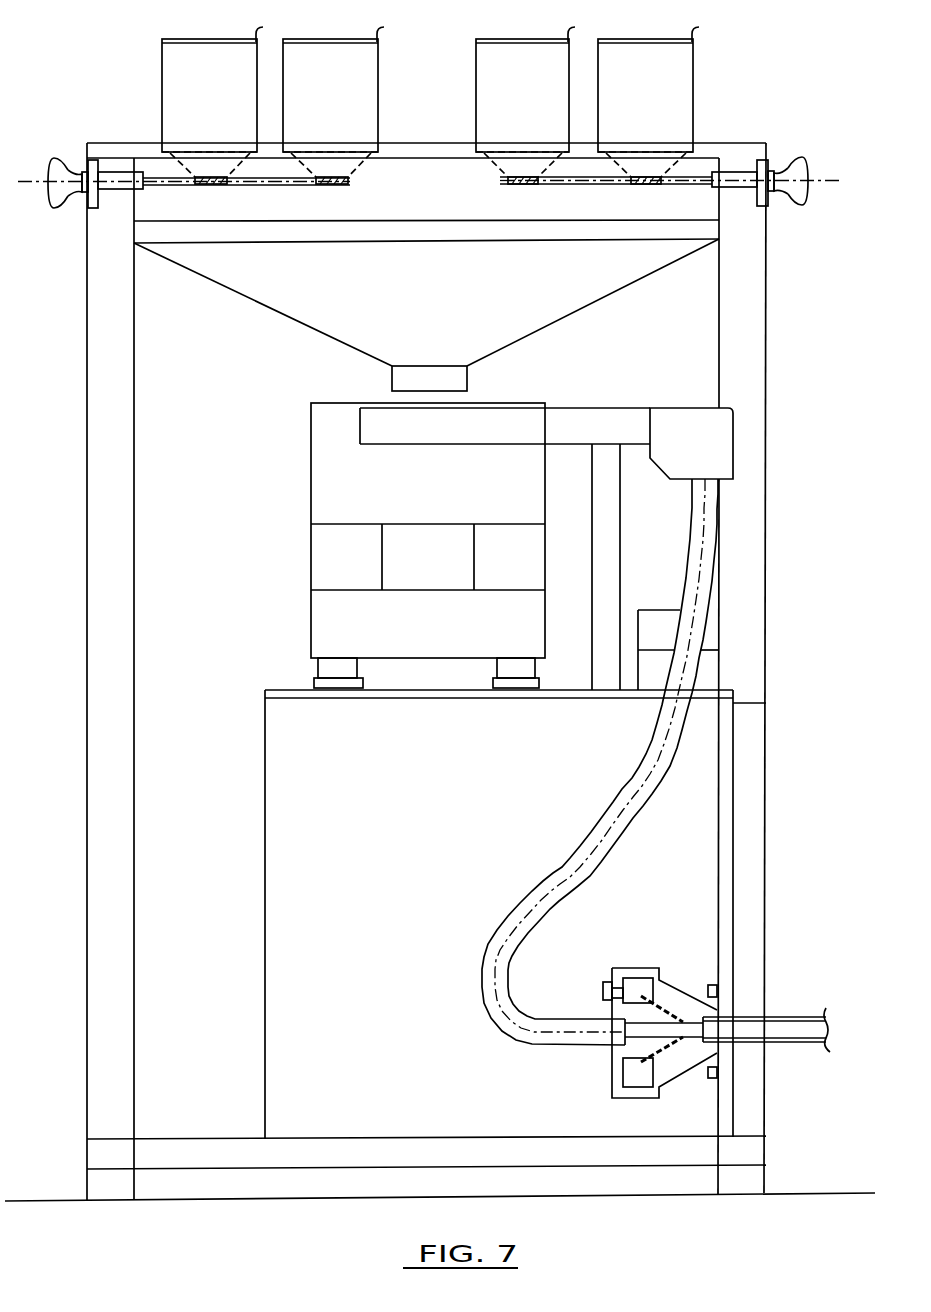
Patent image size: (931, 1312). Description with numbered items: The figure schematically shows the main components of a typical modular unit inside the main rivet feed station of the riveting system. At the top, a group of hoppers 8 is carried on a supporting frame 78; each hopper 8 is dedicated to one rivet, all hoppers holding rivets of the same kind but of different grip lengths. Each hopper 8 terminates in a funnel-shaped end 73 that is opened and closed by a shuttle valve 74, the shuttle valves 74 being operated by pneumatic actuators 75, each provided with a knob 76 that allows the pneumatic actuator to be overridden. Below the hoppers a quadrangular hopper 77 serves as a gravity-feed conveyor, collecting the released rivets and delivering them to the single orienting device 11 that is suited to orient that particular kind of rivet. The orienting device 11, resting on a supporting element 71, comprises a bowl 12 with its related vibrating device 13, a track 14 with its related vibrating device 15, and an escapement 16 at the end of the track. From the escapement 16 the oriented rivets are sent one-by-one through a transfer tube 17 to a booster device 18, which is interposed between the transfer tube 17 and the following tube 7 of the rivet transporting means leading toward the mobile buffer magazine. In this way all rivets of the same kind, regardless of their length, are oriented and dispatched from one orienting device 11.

The rivet transporting means 7 is at (785, 1020).
The hopper 8 is at (360, 100).
The orienting device 11 is at (290, 694).
The bowl 12 is at (323, 483).
The vibrating device 13 is at (328, 637).
The track 14 is at (572, 418).
The vibrating device 15 is at (607, 650).
The escapement 16 is at (725, 430).
The transfer tube 17 is at (649, 772).
The booster device 18 is at (668, 1068).
The supporting element 71 is at (283, 882).
The funnel-shaped end 73 is at (508, 163).
The shuttle valve 74 is at (521, 186).
The pneumatic actuator 75 is at (744, 186).
The knob 76 is at (797, 200).
The quadrangular hopper 77 is at (565, 296).
The supporting frame 78 is at (95, 912).